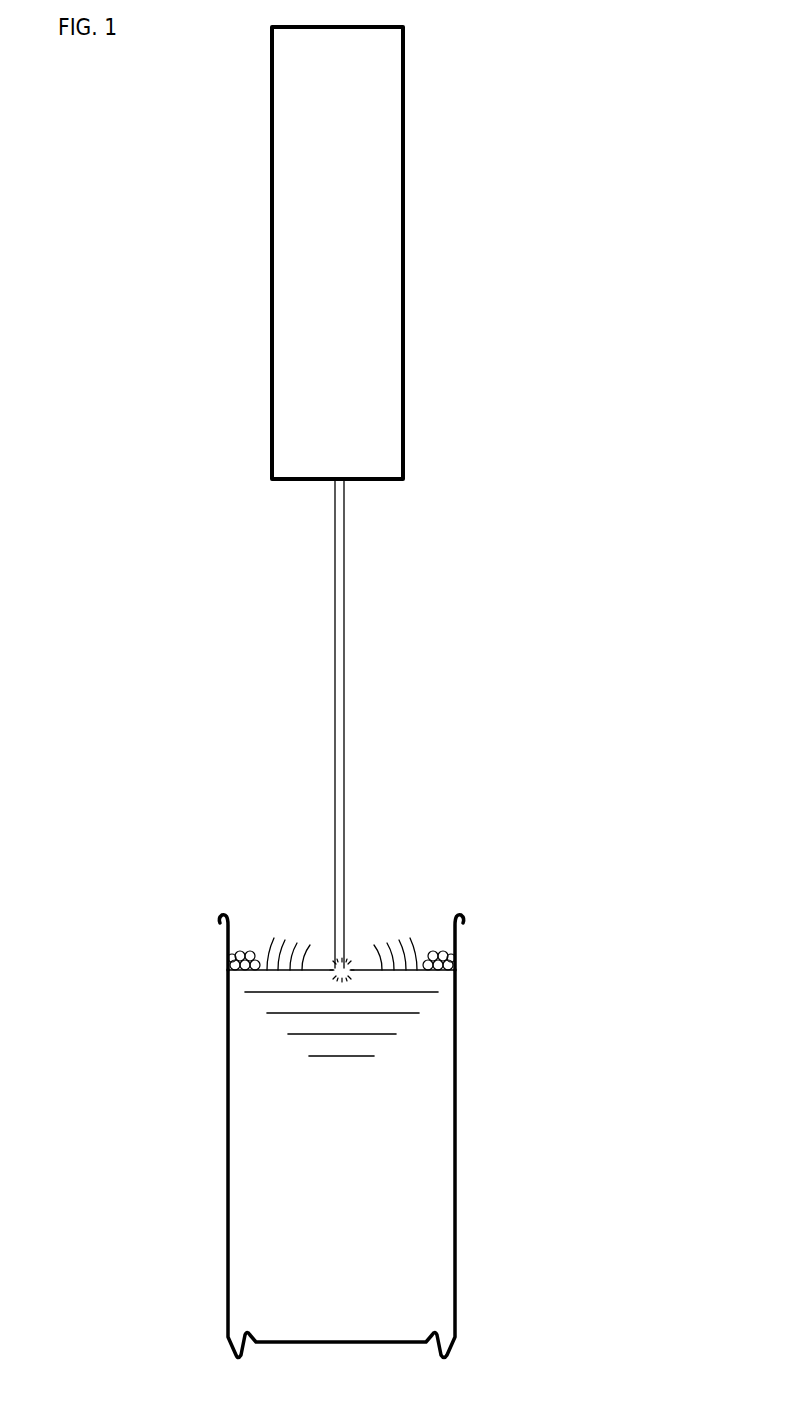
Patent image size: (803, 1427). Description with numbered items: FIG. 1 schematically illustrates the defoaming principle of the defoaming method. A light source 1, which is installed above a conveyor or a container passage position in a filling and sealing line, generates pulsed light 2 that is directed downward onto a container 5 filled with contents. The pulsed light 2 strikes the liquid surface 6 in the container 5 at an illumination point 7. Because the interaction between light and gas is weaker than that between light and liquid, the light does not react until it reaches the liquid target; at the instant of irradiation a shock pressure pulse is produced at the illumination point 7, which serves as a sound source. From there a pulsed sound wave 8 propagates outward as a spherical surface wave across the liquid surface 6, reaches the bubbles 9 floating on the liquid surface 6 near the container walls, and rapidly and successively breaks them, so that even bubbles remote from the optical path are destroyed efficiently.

The light source 1 is at (403, 361).
The pulsed light 2 is at (344, 618).
The container 5 is at (456, 1128).
The liquid surface 6 is at (362, 967).
The illumination point 7 is at (336, 965).
The pulsed sound wave 8 is at (277, 937).
The bubble 9 is at (456, 947).